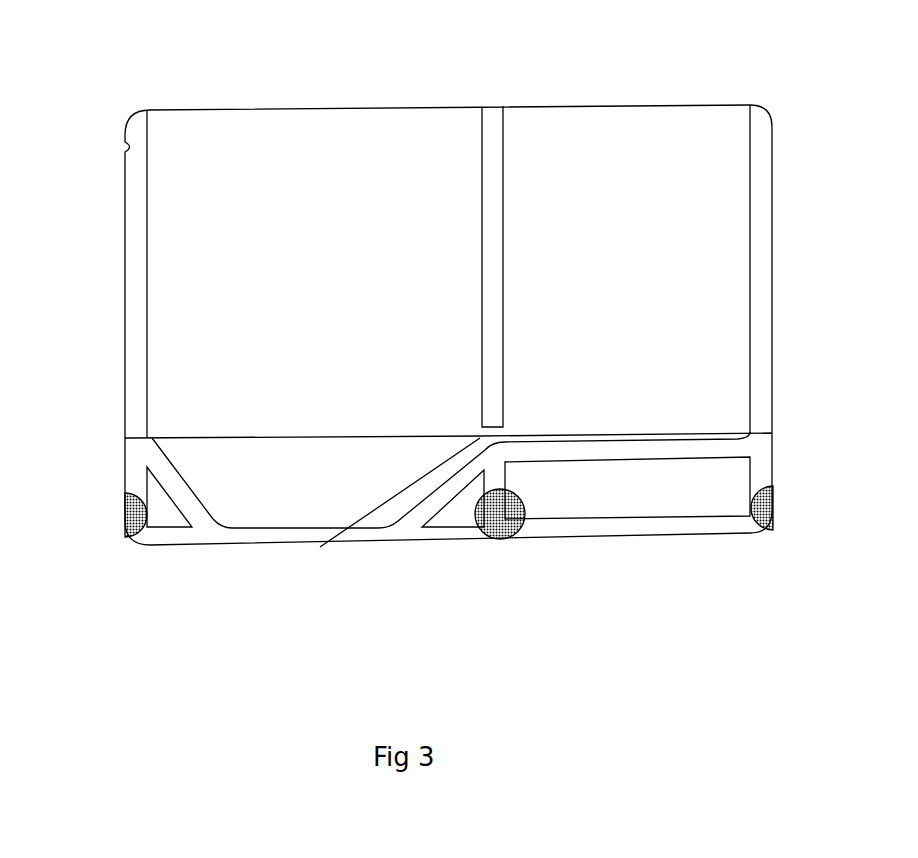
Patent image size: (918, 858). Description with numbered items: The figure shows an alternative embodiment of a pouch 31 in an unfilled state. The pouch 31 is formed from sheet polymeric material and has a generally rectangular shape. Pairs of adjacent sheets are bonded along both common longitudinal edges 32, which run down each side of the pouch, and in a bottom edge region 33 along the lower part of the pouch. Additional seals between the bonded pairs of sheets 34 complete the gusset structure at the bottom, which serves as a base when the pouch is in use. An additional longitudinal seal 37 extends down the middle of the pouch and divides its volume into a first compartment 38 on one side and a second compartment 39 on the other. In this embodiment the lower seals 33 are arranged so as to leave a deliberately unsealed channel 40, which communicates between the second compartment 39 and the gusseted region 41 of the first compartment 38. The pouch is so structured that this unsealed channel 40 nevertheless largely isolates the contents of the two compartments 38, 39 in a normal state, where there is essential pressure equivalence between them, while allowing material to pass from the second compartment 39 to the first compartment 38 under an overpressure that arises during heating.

The pouch 31 is at (168, 86).
The common longitudinal edges 32 is at (139, 227).
The bottom edge region seals 33 is at (136, 477).
The additional seals between bonded pairs of sheets 34 is at (136, 516).
The additional longitudinal seal 37 is at (492, 127).
The first compartment 38 is at (314, 128).
The second compartment 39 is at (603, 124).
The unsealed channel 40 is at (482, 440).
The gusseted region 41 is at (296, 507).